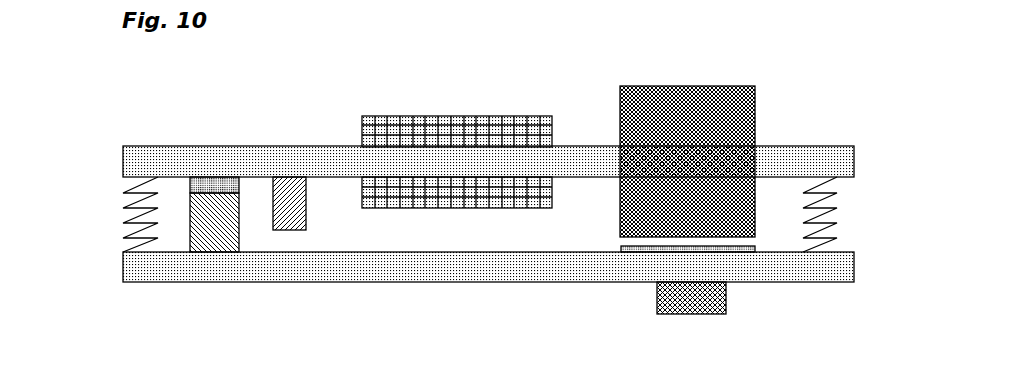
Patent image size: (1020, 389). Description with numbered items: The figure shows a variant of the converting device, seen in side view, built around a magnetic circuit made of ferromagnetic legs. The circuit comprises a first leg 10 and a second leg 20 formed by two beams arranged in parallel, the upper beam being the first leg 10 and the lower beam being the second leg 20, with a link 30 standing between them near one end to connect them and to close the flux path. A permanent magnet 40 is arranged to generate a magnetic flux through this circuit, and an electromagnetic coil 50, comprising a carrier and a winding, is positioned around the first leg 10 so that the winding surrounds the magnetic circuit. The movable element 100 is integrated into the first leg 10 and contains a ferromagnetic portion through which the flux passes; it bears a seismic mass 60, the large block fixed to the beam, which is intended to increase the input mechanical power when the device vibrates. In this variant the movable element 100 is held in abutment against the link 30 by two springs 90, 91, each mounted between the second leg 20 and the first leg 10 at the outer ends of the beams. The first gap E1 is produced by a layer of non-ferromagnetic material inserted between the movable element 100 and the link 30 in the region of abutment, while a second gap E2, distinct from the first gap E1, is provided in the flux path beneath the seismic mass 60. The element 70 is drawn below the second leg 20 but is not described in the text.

The first leg 10 is at (293, 148).
The second leg 20 is at (393, 278).
The link 30 is at (215, 238).
The permanent magnet 40 is at (298, 213).
The electromagnetic coil 50 is at (460, 118).
The seismic mass 60 is at (683, 97).
The lower member 70 is at (693, 307).
The first spring 90 is at (130, 202).
The second spring 91 is at (830, 213).
The movable element 100 is at (790, 145).
The first gap E1 is at (207, 185).
The second gap E2 is at (733, 242).